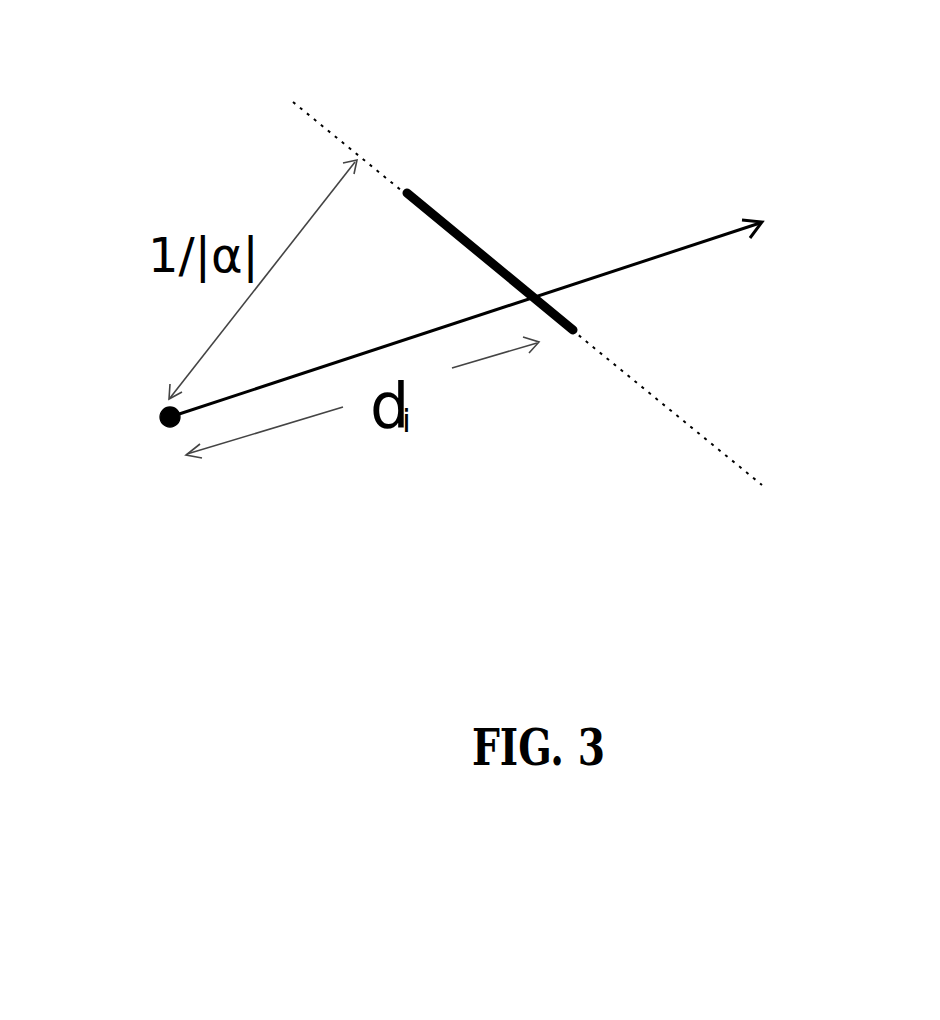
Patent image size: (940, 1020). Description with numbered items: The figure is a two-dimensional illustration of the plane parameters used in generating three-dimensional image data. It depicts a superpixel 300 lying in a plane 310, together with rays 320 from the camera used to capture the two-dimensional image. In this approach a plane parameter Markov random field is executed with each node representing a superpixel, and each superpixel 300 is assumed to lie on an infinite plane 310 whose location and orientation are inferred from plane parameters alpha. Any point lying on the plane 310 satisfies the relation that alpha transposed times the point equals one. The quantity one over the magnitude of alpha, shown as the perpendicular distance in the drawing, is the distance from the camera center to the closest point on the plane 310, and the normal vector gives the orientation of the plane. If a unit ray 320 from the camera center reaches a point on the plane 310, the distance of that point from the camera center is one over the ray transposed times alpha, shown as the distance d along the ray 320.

The superpixel 300 is at (505, 264).
The plane 310 is at (744, 468).
The rays 320 is at (716, 228).